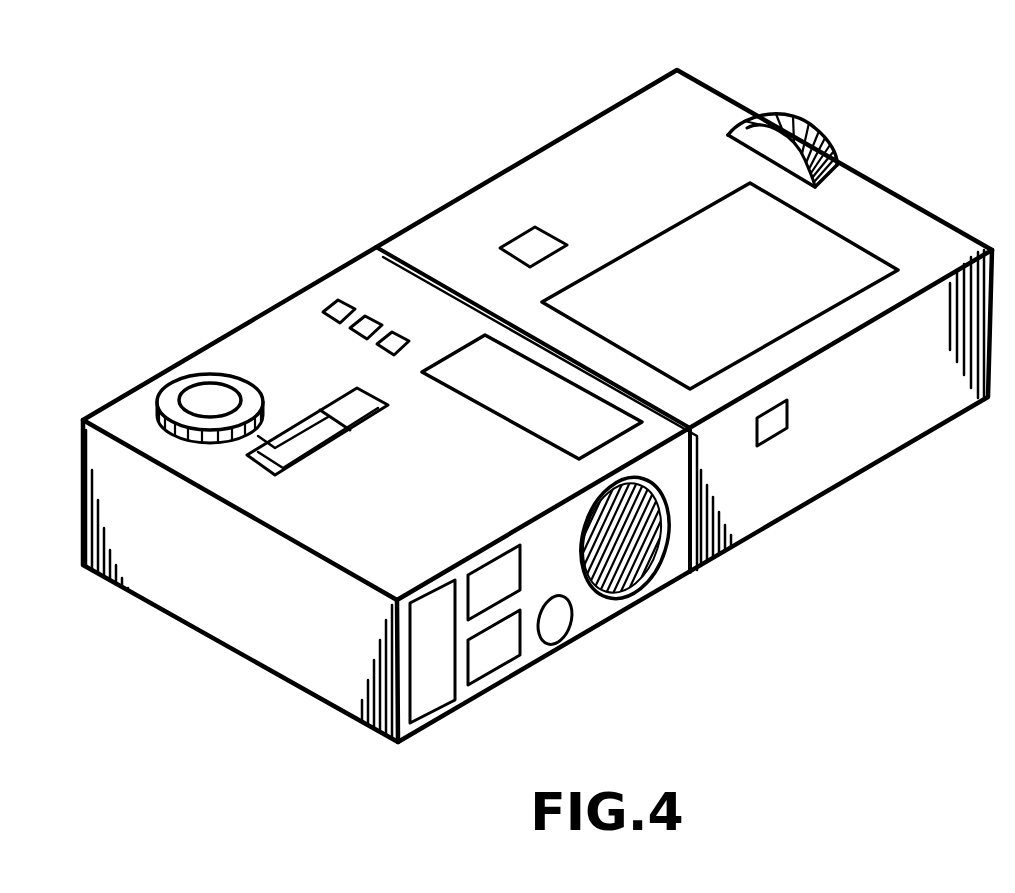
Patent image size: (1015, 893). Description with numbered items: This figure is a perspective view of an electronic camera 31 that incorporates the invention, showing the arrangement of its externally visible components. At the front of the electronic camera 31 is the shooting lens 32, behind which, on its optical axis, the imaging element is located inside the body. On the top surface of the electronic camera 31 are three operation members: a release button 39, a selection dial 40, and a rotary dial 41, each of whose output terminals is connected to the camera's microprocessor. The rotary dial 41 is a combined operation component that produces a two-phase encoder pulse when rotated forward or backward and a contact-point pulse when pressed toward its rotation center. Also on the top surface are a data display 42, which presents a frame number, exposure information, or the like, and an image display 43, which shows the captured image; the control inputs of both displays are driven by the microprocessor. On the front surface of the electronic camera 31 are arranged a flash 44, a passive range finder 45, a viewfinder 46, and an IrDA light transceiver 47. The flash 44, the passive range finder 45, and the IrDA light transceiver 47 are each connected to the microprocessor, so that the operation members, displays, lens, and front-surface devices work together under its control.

The electronic camera 31 is at (252, 625).
The shooting lens 32 is at (657, 547).
The release button 39 is at (215, 397).
The selection dial 40 is at (173, 400).
The rotary dial 41 is at (797, 118).
The data display 42 is at (478, 378).
The image display 43 is at (672, 263).
The flash 44 is at (425, 693).
The passive range finder 45 is at (480, 663).
The viewfinder 46 is at (562, 632).
The IrDA light transceiver 47 is at (775, 438).